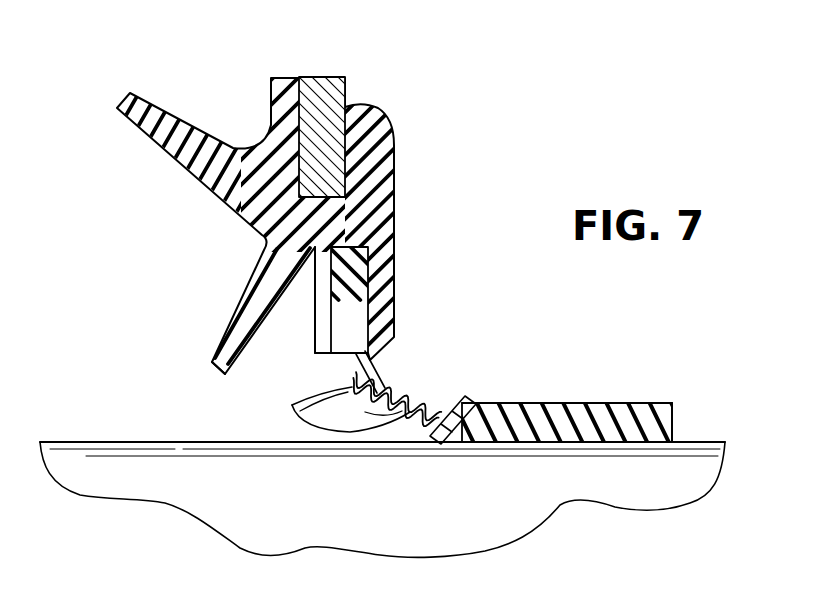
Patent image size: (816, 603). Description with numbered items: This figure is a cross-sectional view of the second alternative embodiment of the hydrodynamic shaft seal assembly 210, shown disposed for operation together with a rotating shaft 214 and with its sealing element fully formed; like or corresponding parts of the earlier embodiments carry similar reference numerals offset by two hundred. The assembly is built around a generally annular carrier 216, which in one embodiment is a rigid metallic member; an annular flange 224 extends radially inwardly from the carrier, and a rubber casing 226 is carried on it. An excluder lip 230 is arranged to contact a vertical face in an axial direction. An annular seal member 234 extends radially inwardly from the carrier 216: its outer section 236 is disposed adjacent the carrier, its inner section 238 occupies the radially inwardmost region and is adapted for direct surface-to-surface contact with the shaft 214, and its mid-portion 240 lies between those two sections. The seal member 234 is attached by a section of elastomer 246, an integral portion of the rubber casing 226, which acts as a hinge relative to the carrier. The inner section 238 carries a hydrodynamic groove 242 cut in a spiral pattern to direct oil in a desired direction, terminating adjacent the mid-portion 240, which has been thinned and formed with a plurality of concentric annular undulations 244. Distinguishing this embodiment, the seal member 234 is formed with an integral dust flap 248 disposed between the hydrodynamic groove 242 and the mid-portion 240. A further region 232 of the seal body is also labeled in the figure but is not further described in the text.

The seal assembly 210 is at (480, 90).
The rotating shaft 214 is at (83, 442).
The carrier 216 is at (322, 75).
The annular flange 224 is at (345, 105).
The rubber casing 226 is at (284, 76).
The excluder lip 230 is at (122, 102).
The lower arm 232 is at (211, 373).
The seal member 234 is at (678, 420).
The outer section 236 is at (315, 302).
The inner section 238 is at (670, 380).
The mid-portion 240 is at (473, 376).
The hydrodynamic groove 242 is at (635, 444).
The annular undulations 244 is at (294, 405).
The section of elastomer 246 is at (396, 227).
The dust flap 248 is at (433, 440).